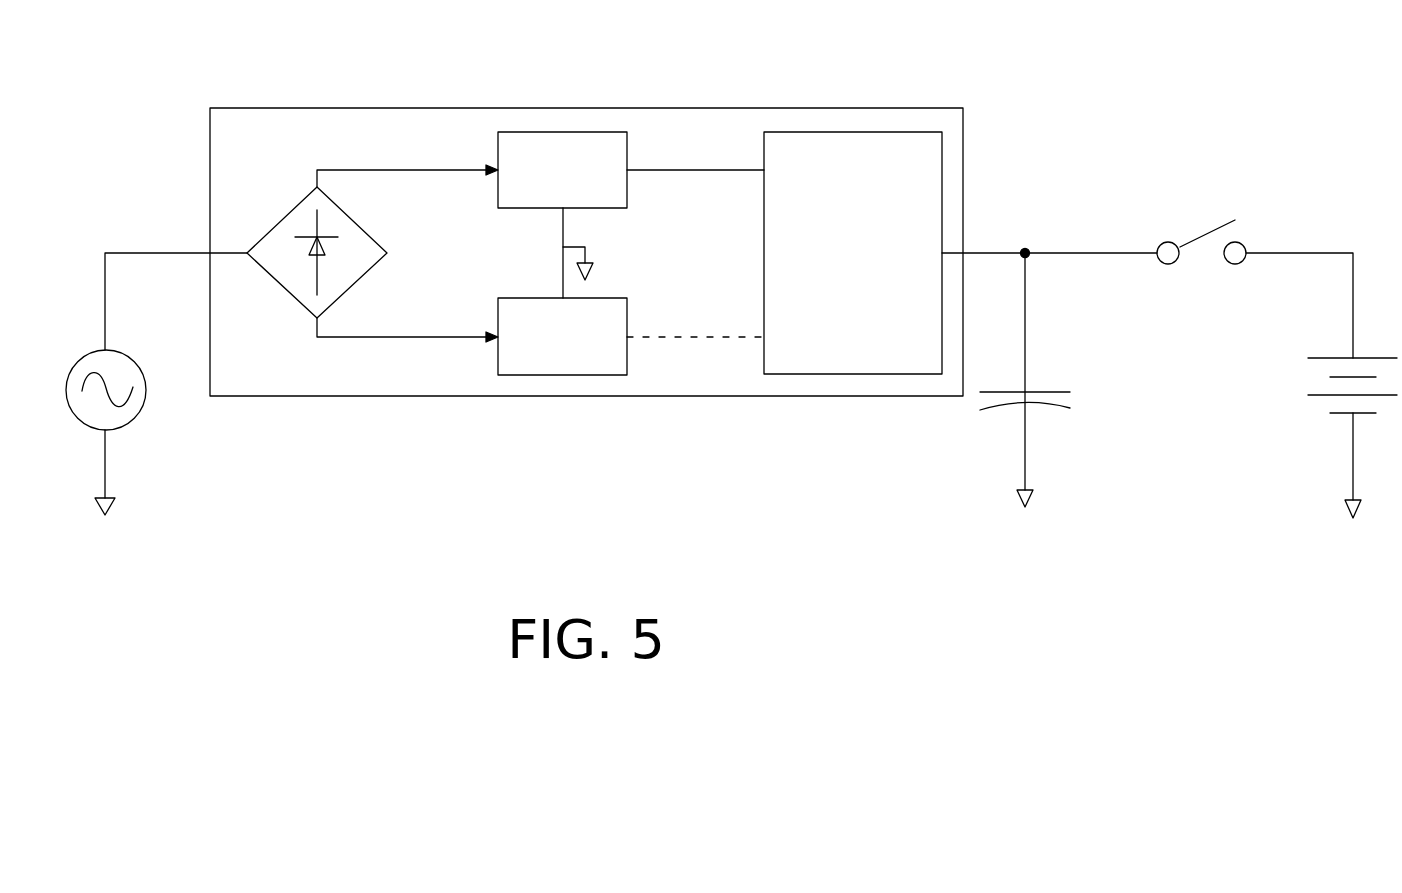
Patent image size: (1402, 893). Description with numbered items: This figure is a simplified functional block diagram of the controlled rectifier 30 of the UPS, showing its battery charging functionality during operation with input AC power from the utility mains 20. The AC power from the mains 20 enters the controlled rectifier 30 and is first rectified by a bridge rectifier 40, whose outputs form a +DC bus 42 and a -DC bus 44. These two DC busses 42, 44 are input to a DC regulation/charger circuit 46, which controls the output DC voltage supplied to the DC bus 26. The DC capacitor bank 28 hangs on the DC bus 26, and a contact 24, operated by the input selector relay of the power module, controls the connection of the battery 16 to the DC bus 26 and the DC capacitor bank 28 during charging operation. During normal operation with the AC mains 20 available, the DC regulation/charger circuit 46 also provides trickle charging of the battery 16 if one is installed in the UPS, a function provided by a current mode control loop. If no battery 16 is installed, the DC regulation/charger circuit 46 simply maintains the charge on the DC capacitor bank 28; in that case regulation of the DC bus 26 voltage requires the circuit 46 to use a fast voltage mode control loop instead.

The battery 16 is at (1325, 357).
The utility mains 20 is at (132, 252).
The contact 24 is at (1195, 242).
The DC bus 26 is at (1030, 252).
The DC capacitor bank 28 is at (1047, 402).
The controlled rectifier 30 is at (260, 108).
The bridge rectifier 40 is at (280, 285).
The +DC bus 42 is at (565, 132).
The -DC bus 44 is at (560, 375).
The DC regulation/charger circuit 46 is at (853, 132).